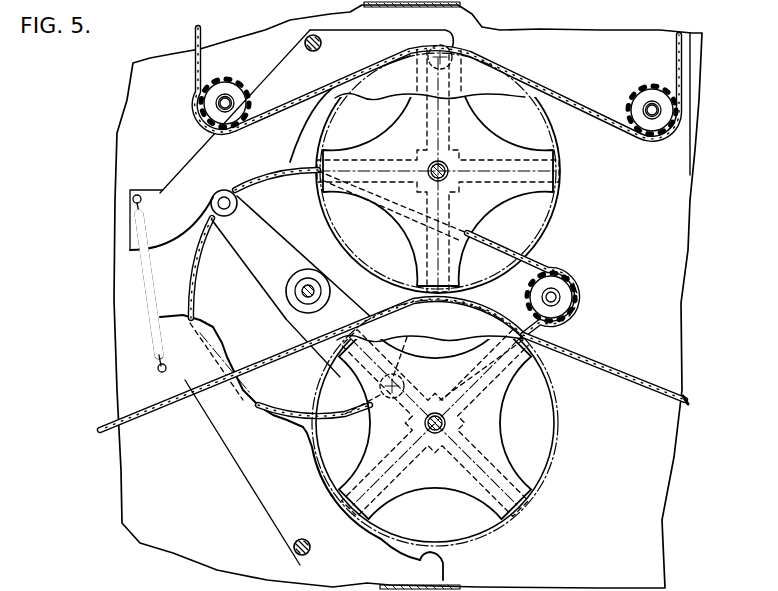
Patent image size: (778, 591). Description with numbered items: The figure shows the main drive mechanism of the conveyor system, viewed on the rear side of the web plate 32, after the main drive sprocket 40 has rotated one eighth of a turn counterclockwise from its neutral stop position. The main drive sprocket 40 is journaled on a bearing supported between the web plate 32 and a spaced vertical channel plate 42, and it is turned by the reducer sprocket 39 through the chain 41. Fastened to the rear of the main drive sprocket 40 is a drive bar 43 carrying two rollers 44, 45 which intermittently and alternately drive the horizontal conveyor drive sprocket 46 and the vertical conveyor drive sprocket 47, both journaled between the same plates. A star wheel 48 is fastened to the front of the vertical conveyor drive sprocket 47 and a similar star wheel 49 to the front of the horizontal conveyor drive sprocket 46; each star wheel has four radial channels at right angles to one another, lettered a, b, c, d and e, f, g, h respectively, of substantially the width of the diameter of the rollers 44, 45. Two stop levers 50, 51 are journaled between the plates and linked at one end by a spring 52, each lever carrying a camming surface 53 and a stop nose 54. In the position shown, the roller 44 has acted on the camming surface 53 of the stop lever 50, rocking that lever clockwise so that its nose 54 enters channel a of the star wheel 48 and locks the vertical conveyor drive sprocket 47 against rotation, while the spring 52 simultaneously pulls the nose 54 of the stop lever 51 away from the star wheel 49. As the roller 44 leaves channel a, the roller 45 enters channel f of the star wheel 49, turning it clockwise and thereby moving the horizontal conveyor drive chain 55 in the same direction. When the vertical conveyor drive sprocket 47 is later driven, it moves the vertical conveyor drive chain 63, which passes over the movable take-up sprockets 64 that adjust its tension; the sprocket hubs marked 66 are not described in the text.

The web plate 32 is at (658, 503).
The reducer sprocket 39 is at (568, 297).
The main drive sprocket 40 is at (272, 195).
The chain 41 is at (535, 252).
The vertical channel plate 42 is at (450, 583).
The drive bar 43 is at (265, 268).
The roller 44 is at (222, 200).
The roller 45 is at (380, 428).
The horizontal conveyor drive sprocket 46 is at (465, 320).
The vertical conveyor drive sprocket 47 is at (500, 80).
The star wheel 48 is at (543, 152).
The star wheel 49 is at (522, 474).
The stop lever 50 is at (405, 36).
The stop lever 51 is at (258, 480).
The spring 52 is at (134, 277).
The camming surface 53 is at (283, 180).
The stop nose 54 is at (470, 50).
The horizontal conveyor drive chain 55 is at (630, 383).
The vertical conveyor drive chain 63 is at (580, 100).
The take-up sprockets 64 is at (225, 82).
The sprocket shaft 66 is at (222, 104).